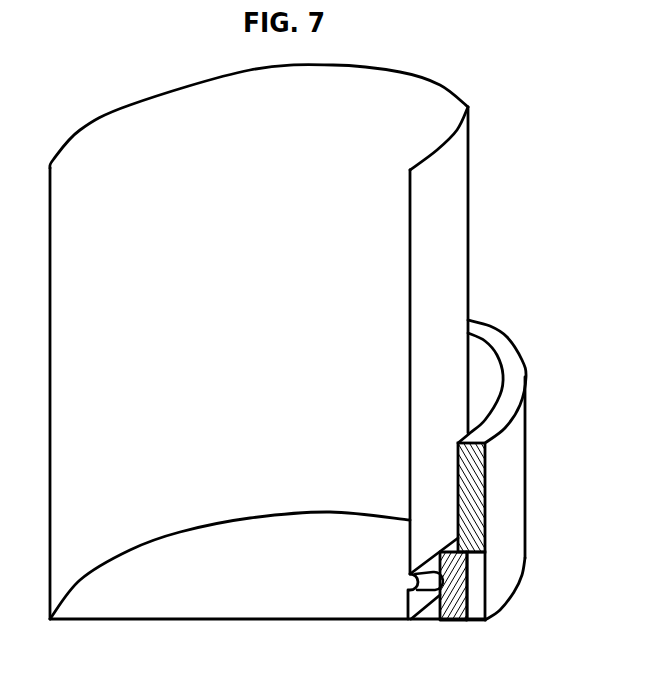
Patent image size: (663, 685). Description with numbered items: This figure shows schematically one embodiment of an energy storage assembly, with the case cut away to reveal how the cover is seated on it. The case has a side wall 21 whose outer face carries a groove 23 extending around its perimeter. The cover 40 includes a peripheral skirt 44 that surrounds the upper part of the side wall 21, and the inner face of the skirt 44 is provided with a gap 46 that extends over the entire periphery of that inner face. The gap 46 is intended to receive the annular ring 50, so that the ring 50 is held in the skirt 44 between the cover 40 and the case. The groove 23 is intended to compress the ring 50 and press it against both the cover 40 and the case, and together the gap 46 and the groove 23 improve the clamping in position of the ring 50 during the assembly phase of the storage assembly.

The side wall 21 is at (450, 252).
The groove 23 is at (423, 578).
The cover 40 is at (512, 383).
The peripheral skirt 44 is at (512, 502).
The gap 46 is at (485, 587).
The annular ring 50 is at (487, 611).